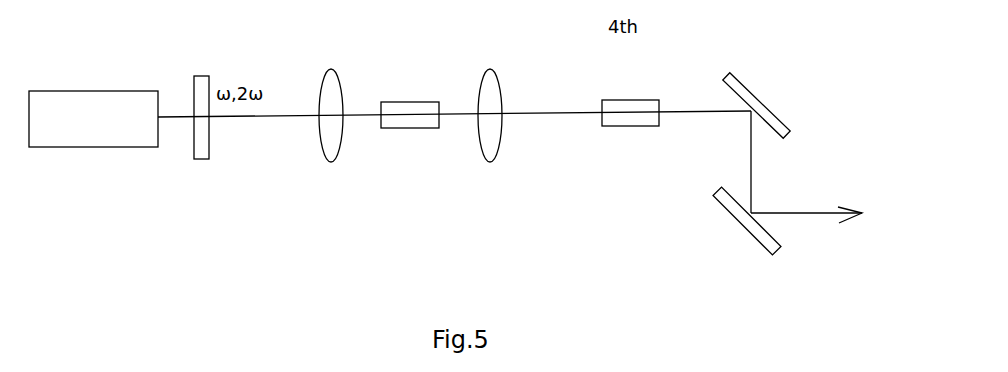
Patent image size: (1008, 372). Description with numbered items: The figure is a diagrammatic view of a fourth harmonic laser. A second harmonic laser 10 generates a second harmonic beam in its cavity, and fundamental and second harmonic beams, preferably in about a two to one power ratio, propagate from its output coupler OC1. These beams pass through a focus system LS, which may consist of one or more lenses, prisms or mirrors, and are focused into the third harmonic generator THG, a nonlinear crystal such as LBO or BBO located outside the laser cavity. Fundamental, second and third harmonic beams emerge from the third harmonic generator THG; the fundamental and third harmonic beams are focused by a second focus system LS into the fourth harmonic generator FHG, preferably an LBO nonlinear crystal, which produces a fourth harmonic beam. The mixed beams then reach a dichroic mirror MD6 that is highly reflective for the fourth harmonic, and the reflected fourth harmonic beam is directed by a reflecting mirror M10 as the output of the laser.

The second harmonic laser 10 is at (93, 139).
The output coupler OC1 is at (176, 103).
The focus system LS is at (410, 133).
The third harmonic generator THG is at (410, 101).
The fourth harmonic generator FHG is at (630, 99).
The dichroic mirror MD6 is at (746, 90).
The reflecting mirror M10 is at (743, 229).